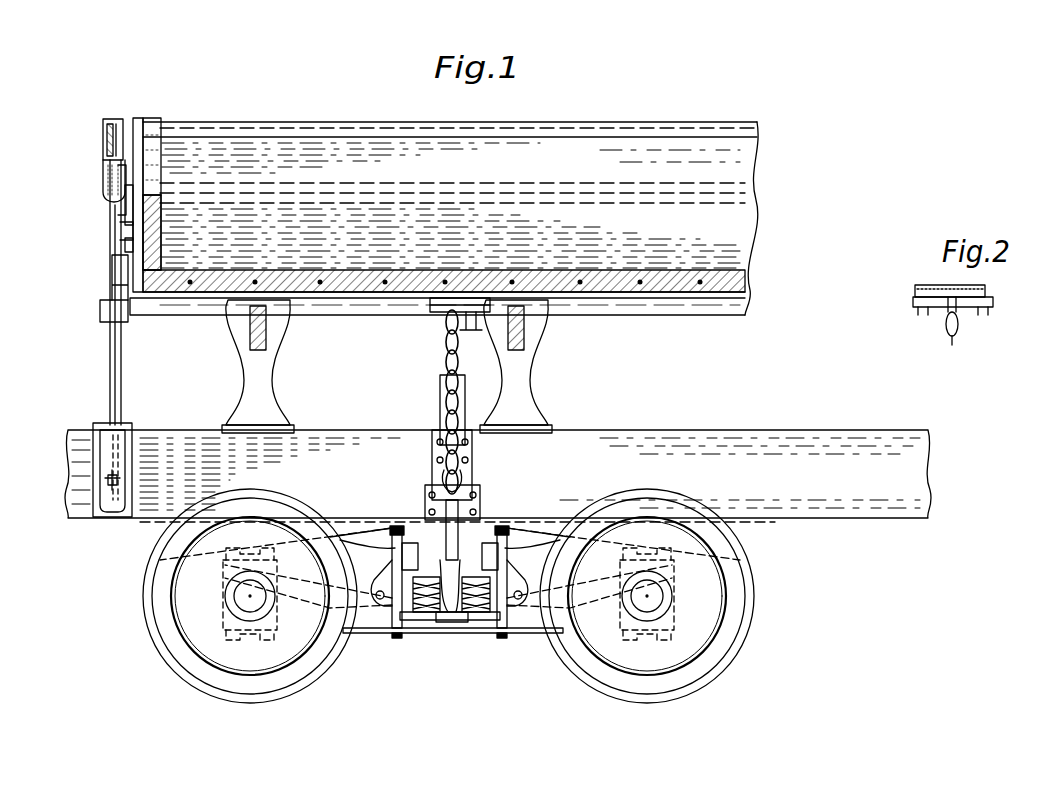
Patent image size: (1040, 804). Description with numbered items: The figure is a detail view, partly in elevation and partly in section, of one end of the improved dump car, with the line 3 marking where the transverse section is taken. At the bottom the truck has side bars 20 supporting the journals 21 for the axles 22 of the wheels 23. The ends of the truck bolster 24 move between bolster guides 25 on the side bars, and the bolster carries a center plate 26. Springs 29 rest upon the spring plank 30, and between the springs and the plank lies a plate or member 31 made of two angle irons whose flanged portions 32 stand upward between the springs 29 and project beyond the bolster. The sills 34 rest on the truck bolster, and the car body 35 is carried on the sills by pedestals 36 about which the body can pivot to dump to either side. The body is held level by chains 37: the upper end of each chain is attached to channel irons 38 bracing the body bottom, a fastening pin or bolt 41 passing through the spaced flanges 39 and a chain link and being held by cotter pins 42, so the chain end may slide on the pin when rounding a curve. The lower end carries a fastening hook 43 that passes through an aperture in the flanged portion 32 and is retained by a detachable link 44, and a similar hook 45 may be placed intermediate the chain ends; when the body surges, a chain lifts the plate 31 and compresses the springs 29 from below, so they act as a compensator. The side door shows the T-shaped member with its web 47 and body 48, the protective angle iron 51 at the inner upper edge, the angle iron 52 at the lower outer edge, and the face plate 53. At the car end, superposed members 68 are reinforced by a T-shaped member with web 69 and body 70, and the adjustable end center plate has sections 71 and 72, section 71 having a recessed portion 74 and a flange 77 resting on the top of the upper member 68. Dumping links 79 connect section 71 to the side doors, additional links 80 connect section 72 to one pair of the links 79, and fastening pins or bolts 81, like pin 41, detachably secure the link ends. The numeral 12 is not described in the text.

In FIG. 1, the section line 3— 3 is at (470, 330).
In FIG. 2, the car body floor plate 12 is at (913, 298).
In FIG. 1, the side bars 20 is at (386, 628).
In FIG. 1, the journals 21 is at (258, 632).
In FIG. 1, the axles 22 is at (252, 597).
In FIG. 1, the wheels 23 is at (282, 678).
In FIG. 1, the truck bolster 24 is at (396, 545).
In FIG. 1, the bolster guides 25 is at (386, 540).
In FIG. 1, the center plate 26 is at (472, 548).
In FIG. 1, the springs 29 is at (432, 633).
In FIG. 1, the spring plank 30 is at (416, 630).
In FIG. 1, the plate or member 31 is at (450, 633).
In FIG. 1, the flanged portion 32 is at (470, 633).
In FIG. 1, the sills 34 is at (660, 440).
In FIG. 1, the car body 35 is at (656, 298).
In FIG. 1, the pedestals 36 is at (268, 382).
In FIG. 1, the chains 37 is at (445, 368).
In FIG. 2, the chains 37 is at (951, 340).
In FIG. 1, the channel irons 38 is at (440, 316).
In FIG. 2, the channel irons 38 is at (940, 286).
In FIG. 1, the flanges 39 is at (470, 330).
In FIG. 2, the flanges 39 is at (922, 314).
In FIG. 1, the fastening pin or bolt 41 is at (426, 314).
In FIG. 2, the fastening pin or bolt 41 is at (948, 312).
In FIG. 1, the cotter pins 42 is at (488, 280).
In FIG. 2, the cotter pins 42 is at (983, 290).
In FIG. 1, the fastening hooks 43 is at (498, 560).
In FIG. 1, the link 44 is at (440, 464).
In FIG. 1, the hook 45 is at (466, 482).
In FIG. 1, the web 47 is at (557, 195).
In FIG. 1, the body 48 is at (502, 185).
In FIG. 1, the angle iron 51 is at (597, 128).
In FIG. 1, the angle iron 52 is at (704, 272).
In FIG. 1, the face plate 53 is at (697, 148).
In FIG. 1, the members 68 is at (160, 147).
In FIG. 1, the web 69 is at (160, 195).
In FIG. 1, the body 70 is at (118, 210).
In FIG. 1, the section 71 is at (136, 118).
In FIG. 1, the section 72 is at (112, 264).
In FIG. 1, the recessed portion 74 is at (128, 234).
In FIG. 1, the flange 77 is at (155, 118).
In FIG. 1, the dumping links 79 is at (110, 118).
In FIG. 1, the links 80 is at (110, 326).
In FIG. 1, the fastening pins or bolts 81 is at (100, 160).